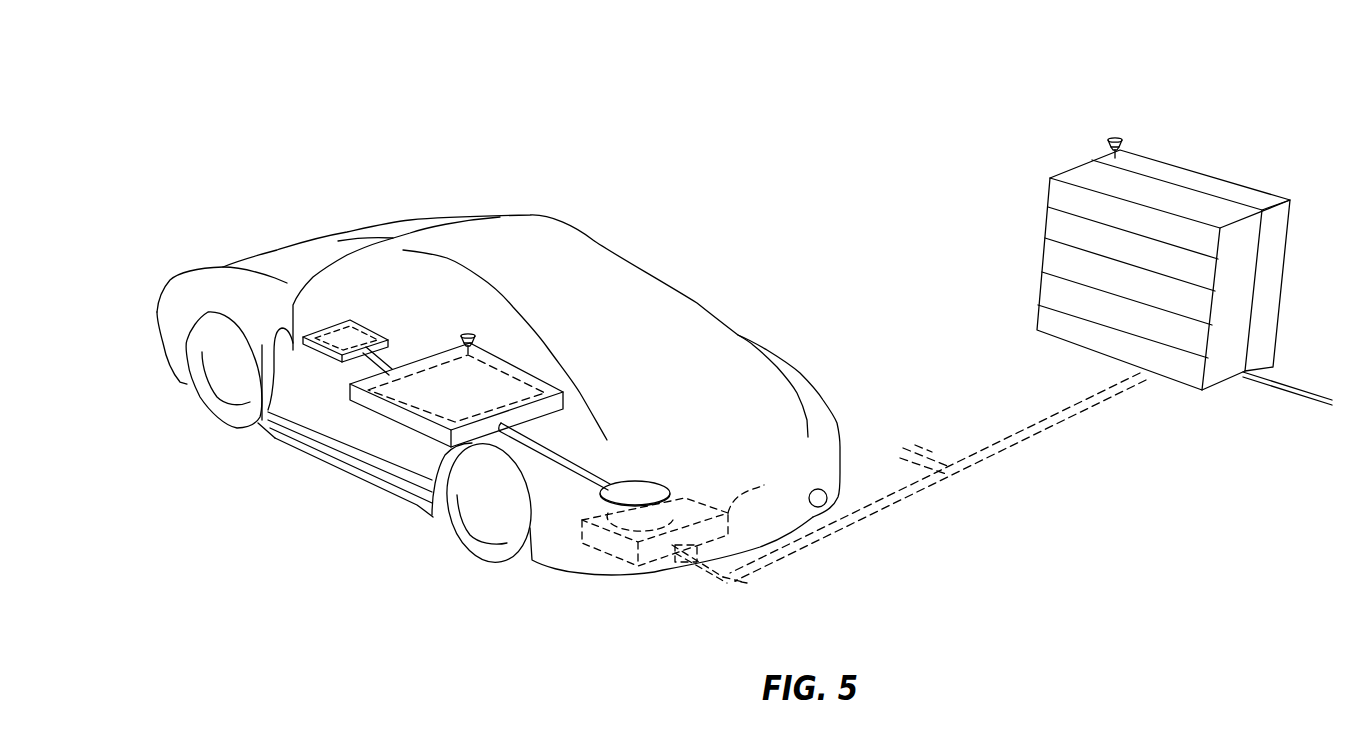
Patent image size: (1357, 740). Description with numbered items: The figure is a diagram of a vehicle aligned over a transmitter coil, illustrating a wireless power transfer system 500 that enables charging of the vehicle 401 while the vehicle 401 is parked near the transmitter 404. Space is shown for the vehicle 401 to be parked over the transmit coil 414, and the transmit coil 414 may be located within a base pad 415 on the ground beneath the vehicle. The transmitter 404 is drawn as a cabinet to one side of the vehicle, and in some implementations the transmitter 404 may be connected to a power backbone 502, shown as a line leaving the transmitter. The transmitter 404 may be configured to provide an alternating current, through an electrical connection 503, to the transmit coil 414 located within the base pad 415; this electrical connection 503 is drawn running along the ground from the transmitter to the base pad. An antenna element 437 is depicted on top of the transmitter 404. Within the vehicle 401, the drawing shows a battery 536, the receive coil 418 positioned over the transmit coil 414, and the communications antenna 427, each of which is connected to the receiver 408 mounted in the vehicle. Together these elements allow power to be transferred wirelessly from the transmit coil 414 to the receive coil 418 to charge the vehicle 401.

The wireless power transfer system 500 is at (489, 66).
The vehicle 401 is at (281, 248).
The battery 536 is at (367, 329).
The receiver 408 is at (357, 379).
The communications antenna 427 is at (467, 335).
The receive coil 418 is at (634, 487).
The transmit coil 414 is at (710, 470).
The base pad 415 is at (764, 485).
The electrical connection 503 is at (1040, 438).
The transmitter 404 is at (1088, 170).
The charging station antenna 437 is at (1116, 140).
The power backbone 502 is at (1302, 399).